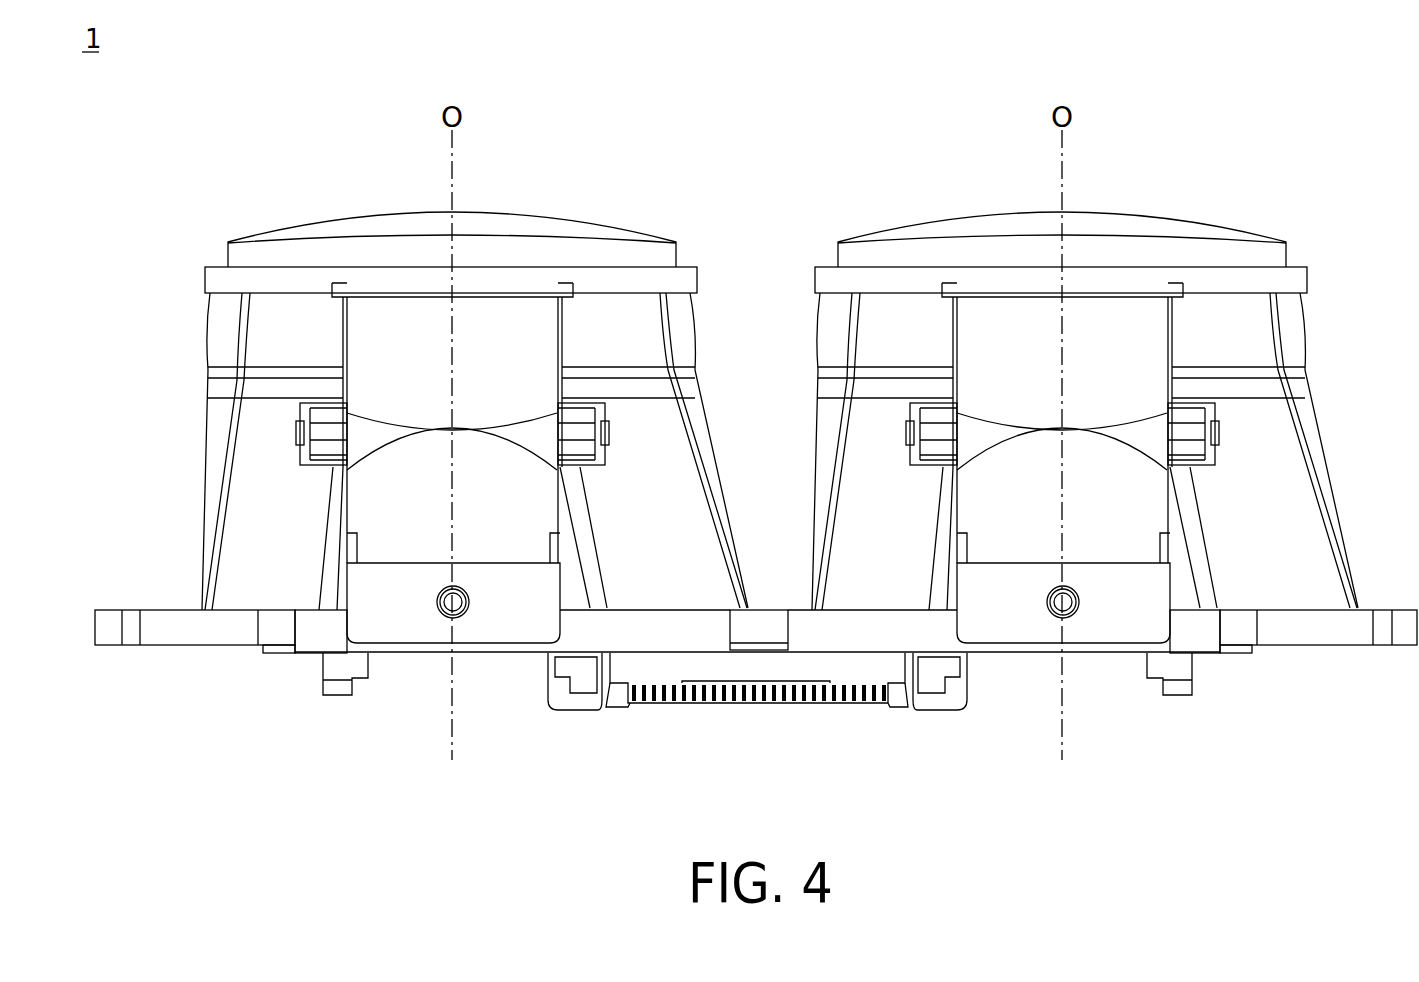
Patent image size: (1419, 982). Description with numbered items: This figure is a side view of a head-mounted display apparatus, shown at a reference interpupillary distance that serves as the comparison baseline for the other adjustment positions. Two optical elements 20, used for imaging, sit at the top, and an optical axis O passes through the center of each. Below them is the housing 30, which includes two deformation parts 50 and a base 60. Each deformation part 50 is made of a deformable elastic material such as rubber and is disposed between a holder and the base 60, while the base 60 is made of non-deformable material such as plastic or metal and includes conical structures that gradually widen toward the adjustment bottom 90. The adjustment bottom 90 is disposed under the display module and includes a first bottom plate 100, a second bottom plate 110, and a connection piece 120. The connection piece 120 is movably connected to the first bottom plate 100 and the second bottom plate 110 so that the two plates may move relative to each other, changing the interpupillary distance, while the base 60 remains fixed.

The optical element 20 is at (1155, 228).
The housing 30 is at (1313, 410).
The deformation part 50 is at (1293, 330).
The base 60 is at (1270, 480).
The adjustment bottom 90 is at (400, 657).
The first bottom plate 100 is at (307, 638).
The second bottom plate 110 is at (1207, 638).
The connection piece 120 is at (756, 705).